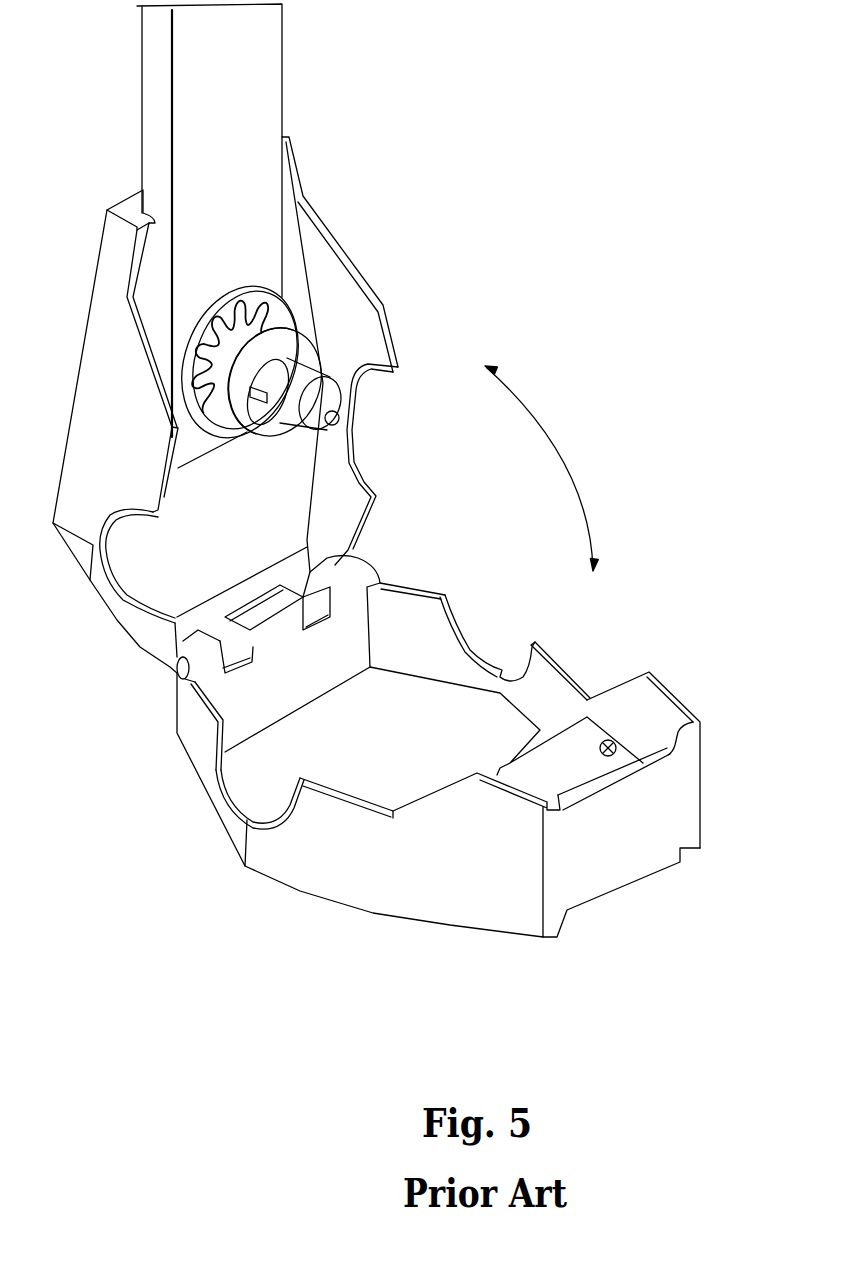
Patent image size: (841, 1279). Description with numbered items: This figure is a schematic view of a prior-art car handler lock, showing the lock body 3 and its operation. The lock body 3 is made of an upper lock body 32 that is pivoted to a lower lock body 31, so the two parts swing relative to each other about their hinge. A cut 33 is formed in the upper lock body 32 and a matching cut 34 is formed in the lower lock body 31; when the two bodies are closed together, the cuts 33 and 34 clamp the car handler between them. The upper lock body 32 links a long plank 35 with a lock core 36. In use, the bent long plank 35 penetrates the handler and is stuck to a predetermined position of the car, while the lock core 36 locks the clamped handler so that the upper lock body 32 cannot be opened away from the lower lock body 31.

The lock body 3 is at (380, 494).
The lower lock body 31 is at (398, 905).
The upper lock body 32 is at (95, 358).
The cut 33 is at (112, 577).
The cut 34 is at (230, 798).
The long plank 35 is at (273, 66).
The lock core 36 is at (297, 347).